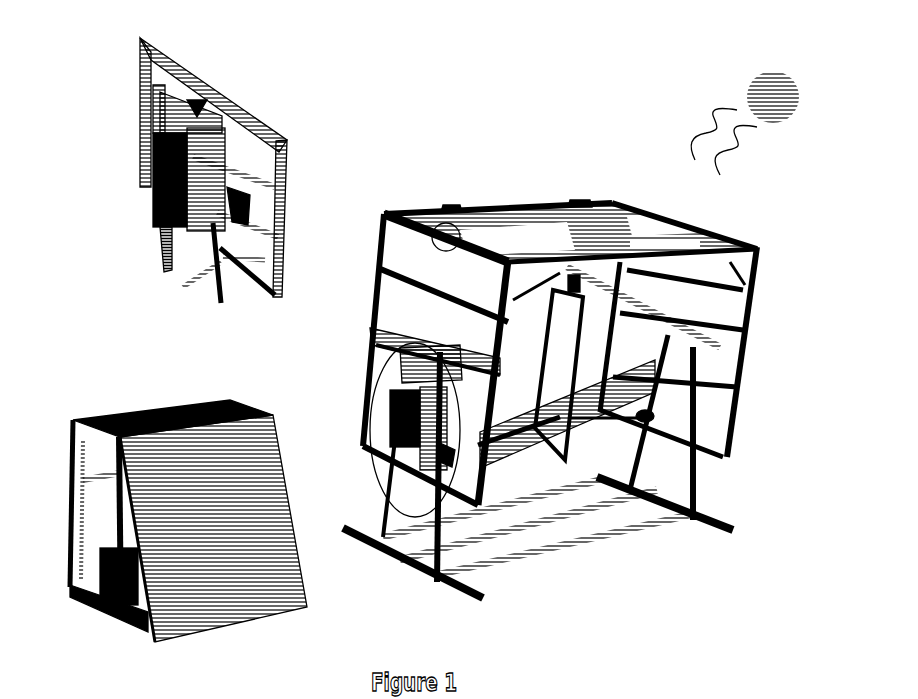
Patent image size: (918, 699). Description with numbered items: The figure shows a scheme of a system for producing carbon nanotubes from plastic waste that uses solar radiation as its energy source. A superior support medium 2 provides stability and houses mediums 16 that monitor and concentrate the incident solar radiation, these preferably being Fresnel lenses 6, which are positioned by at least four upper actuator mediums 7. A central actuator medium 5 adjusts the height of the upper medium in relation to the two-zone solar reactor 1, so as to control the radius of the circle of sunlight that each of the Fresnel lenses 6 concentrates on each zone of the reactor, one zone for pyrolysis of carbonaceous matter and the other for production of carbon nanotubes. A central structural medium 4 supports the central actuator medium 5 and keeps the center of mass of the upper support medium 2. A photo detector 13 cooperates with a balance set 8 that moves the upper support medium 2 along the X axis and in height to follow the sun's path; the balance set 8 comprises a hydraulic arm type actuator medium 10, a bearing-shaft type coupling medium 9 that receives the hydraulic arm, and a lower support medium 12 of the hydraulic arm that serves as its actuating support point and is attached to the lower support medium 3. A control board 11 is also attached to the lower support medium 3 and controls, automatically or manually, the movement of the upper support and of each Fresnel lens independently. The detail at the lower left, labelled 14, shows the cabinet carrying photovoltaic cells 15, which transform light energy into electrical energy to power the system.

The two-zone solar reactor 1 is at (650, 418).
The superior support medium 2 is at (740, 370).
The lower support medium 3 is at (697, 494).
The central structural medium 4 is at (543, 367).
The central actuator medium 5 is at (573, 282).
The Fresnel lenses 6 is at (497, 233).
The upper actuator mediums 7 is at (451, 203).
The balance set 8 is at (83, 42).
The bearing-shaft type coupling medium 9 is at (198, 108).
The hydraulic arm type actuator medium 10 is at (160, 92).
The control board 11 is at (153, 200).
The lower support medium of the hydraulic arm 12 is at (153, 227).
The photo detector 13 is at (455, 245).
The cabinet 14 is at (92, 410).
The photovoltaic cells 15 is at (237, 610).
The mediums for monitoring and concentrating solar radiation 16 is at (738, 123).